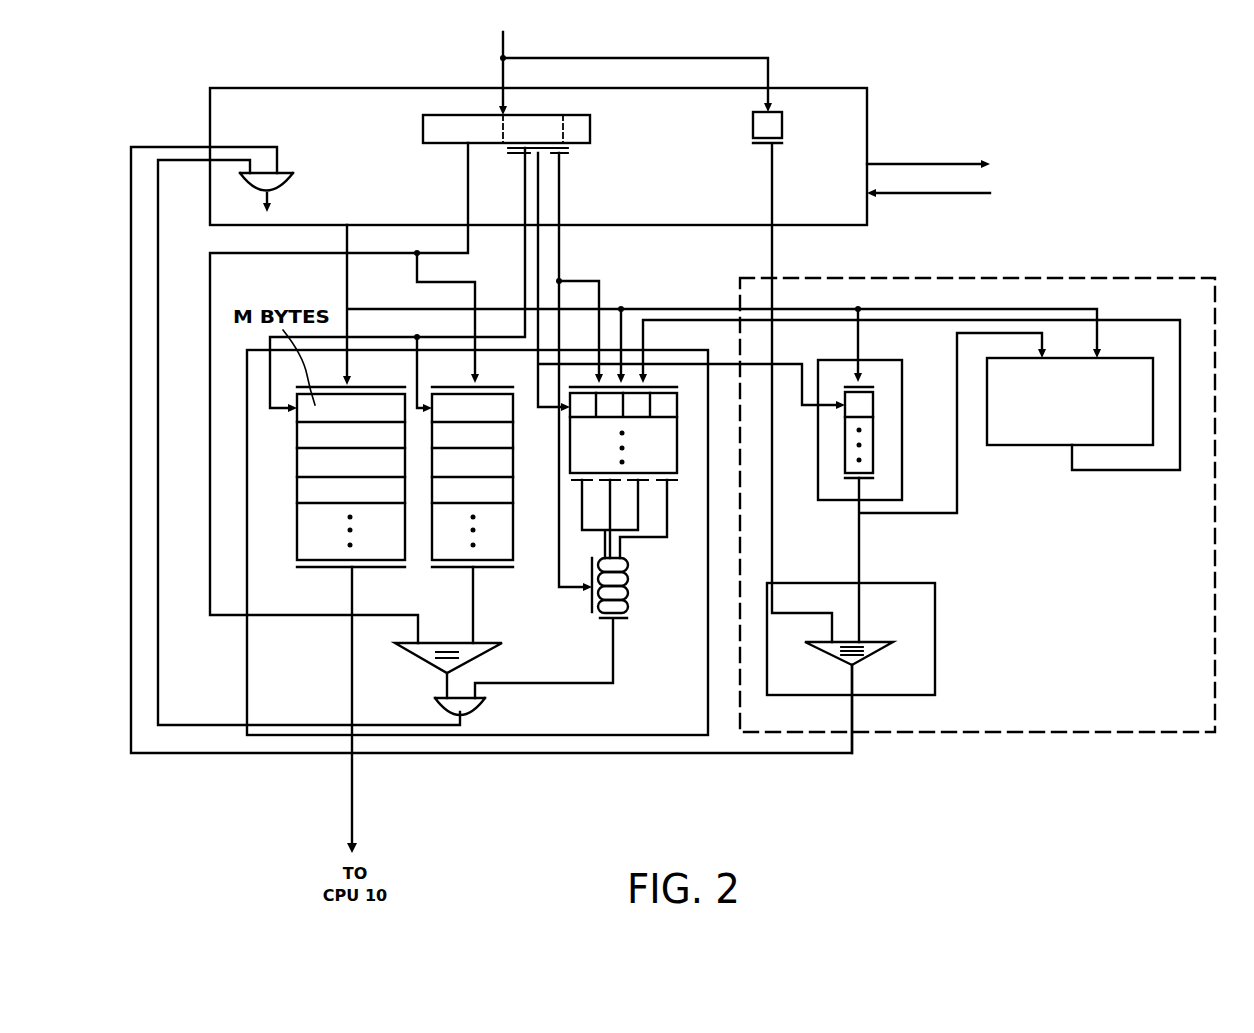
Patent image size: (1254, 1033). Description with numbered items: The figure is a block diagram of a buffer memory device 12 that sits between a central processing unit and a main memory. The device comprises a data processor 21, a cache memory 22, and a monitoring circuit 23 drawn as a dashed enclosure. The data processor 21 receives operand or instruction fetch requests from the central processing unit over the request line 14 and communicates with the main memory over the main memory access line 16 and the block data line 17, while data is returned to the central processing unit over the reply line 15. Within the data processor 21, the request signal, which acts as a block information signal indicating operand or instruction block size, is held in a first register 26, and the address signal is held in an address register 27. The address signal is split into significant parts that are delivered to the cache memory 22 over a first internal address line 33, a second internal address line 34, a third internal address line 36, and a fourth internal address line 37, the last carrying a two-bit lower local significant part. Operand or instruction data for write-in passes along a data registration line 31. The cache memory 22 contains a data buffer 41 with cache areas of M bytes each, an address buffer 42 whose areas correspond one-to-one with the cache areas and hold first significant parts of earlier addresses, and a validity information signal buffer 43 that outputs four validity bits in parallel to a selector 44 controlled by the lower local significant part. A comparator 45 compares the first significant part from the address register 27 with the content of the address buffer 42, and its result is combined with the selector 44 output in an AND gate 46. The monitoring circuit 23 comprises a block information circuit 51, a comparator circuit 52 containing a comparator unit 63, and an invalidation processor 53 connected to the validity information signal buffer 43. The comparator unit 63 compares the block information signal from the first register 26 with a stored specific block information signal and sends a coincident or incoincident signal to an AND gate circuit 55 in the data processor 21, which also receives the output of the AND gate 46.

The buffer memory device 12 is at (220, 828).
The request line 14 is at (503, 42).
The reply line 15 is at (352, 812).
The main memory access line 16 is at (942, 164).
The block data line 17 is at (960, 193).
The data processor 21 is at (841, 88).
The cache memory 22 is at (668, 350).
The monitoring circuit 23 is at (1105, 270).
The first register 26 is at (782, 116).
The address register 27 is at (590, 118).
The data registration line 31 is at (347, 290).
The first internal address line 33 is at (468, 246).
The second internal address line 34 is at (525, 188).
The third internal address line 36 is at (540, 187).
The fourth internal address line 37 is at (559, 210).
The data buffer 41 is at (298, 520).
The address buffer 42 is at (513, 520).
The validity information signal buffer 43 is at (677, 455).
The selector 44 is at (628, 563).
The comparator 45 is at (497, 643).
The AND gate 46 is at (485, 702).
The block information circuit 51 is at (875, 360).
The comparator circuit 52 is at (910, 583).
The invalidation processor 53 is at (1122, 358).
The AND gate circuit 55 is at (293, 178).
The comparator unit 63 is at (880, 642).